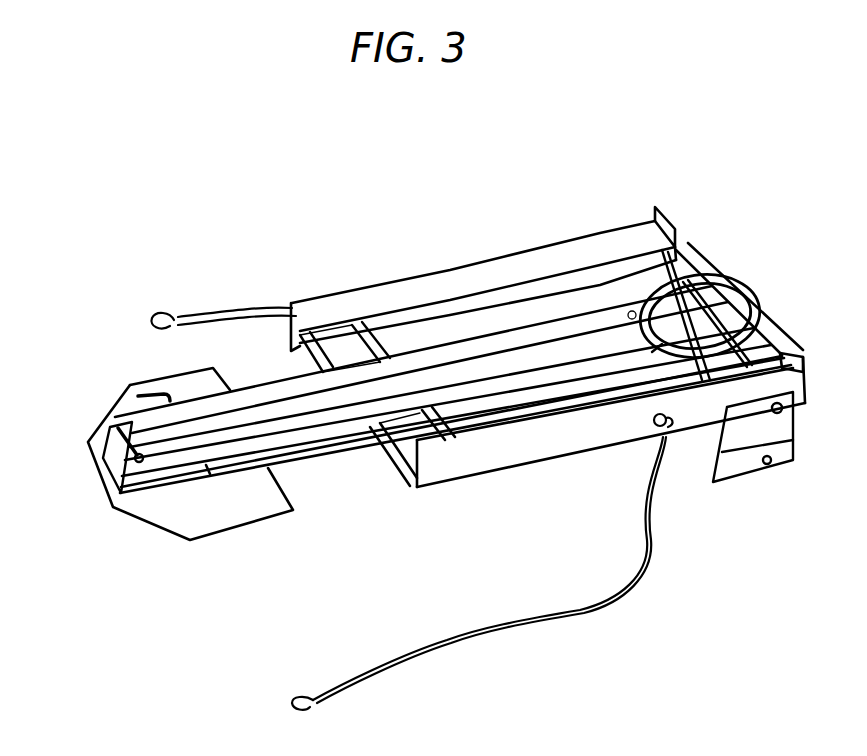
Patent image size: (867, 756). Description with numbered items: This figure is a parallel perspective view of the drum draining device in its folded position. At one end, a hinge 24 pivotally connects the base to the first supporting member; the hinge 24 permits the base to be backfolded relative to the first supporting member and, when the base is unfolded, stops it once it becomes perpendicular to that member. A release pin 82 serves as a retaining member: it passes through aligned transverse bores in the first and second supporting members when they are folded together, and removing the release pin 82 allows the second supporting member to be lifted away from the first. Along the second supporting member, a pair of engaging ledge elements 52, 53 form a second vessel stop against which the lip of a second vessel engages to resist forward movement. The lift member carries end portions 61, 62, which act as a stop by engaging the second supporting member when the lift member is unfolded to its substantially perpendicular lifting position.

The engaging ledge element 52 is at (662, 213).
The engaging ledge element 53 is at (783, 352).
The end portion 61 is at (116, 417).
The end portion 62 is at (104, 458).
The release pin 82 is at (160, 392).
The hinge 24 is at (103, 474).